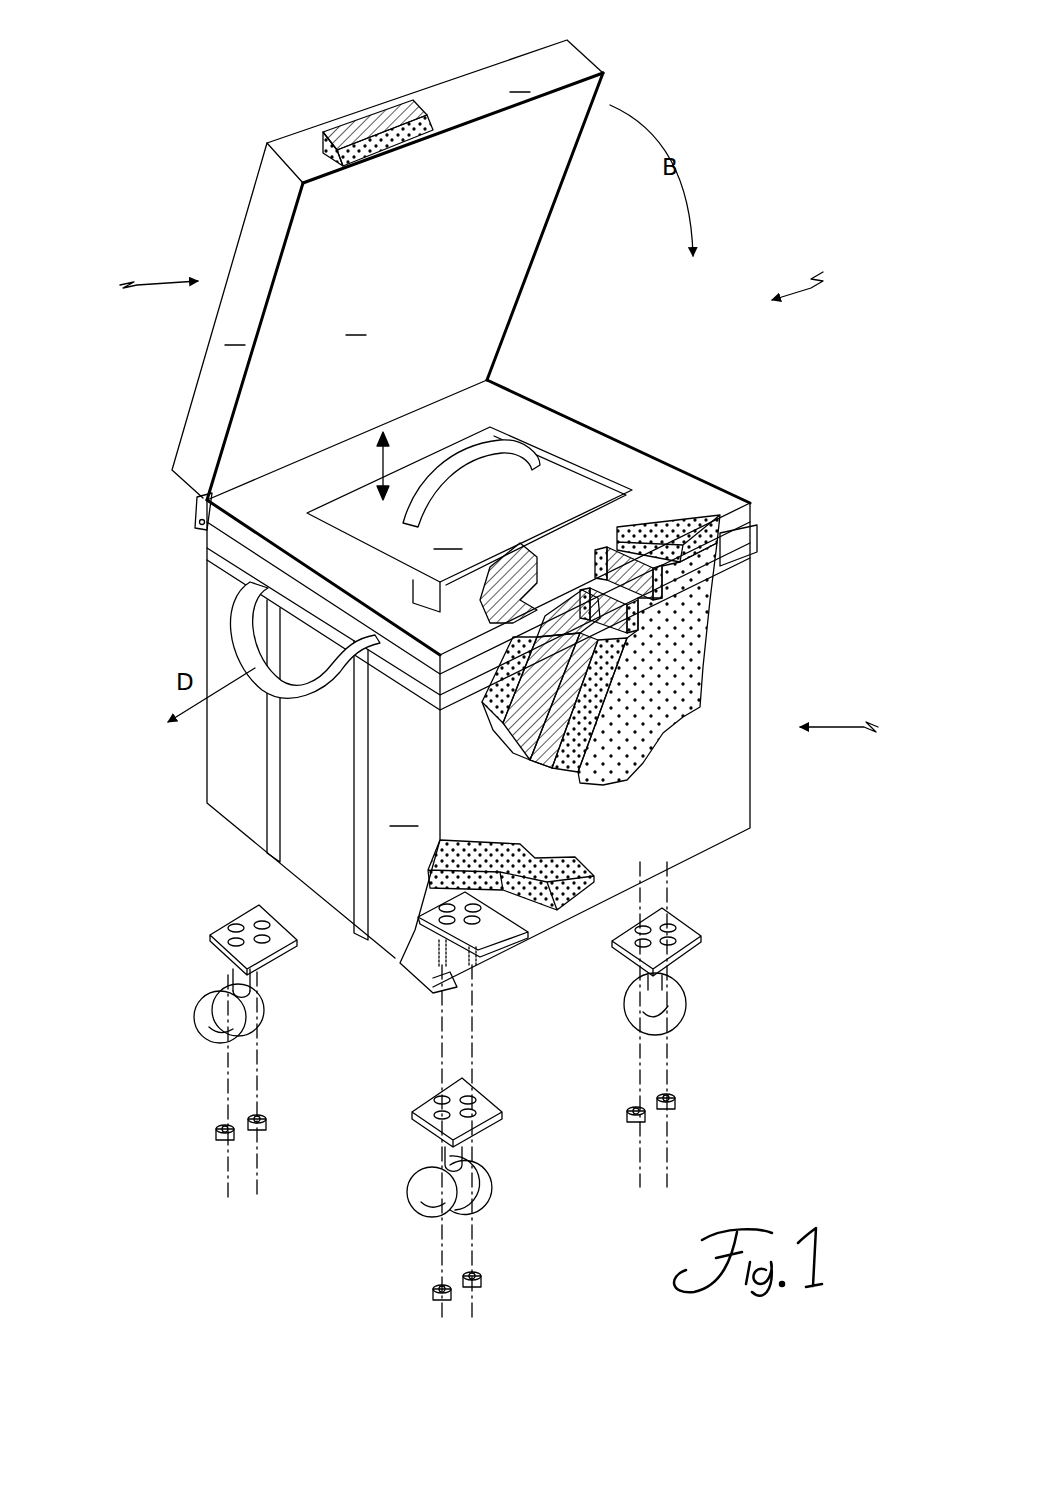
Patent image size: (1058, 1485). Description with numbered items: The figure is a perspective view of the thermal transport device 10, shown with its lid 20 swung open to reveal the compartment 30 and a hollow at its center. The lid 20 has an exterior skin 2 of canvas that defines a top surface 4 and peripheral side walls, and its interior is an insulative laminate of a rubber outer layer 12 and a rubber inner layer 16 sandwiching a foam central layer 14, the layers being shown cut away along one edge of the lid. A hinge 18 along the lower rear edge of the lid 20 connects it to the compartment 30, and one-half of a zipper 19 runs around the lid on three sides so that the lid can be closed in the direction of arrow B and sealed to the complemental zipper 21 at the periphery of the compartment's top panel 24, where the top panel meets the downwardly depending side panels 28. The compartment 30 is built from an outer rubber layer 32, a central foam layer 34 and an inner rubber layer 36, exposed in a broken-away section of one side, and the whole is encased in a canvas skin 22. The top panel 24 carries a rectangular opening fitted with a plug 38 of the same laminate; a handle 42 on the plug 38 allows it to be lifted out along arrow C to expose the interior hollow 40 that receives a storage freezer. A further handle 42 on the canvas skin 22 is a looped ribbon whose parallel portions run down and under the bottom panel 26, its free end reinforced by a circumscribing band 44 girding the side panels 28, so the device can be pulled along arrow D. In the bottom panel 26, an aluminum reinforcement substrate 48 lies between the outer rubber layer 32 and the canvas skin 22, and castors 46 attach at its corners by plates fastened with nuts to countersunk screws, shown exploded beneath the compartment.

The exterior skin 2 is at (432, 82).
The top surface 4 is at (172, 415).
The transport device 10 is at (815, 274).
The rubber outer layer 12 is at (375, 105).
The foam central layer 14 is at (347, 128).
The rubber inner layer 16 is at (327, 150).
The hinge 18 is at (345, 435).
The zipper 19 is at (285, 235).
The lid 20 is at (138, 285).
The zipper 21 is at (197, 500).
The canvas skin 22 is at (735, 578).
The top panel 24 is at (563, 432).
The bottom panel 26 is at (212, 806).
The side panels 28 is at (478, 746).
The compartment 30 is at (856, 727).
The outer rubber layer 32 is at (550, 868).
The central foam layer 34 is at (812, 608).
The inner rubber layer 36 is at (722, 420).
The plug 38 is at (469, 519).
The interior hollow 40 is at (440, 657).
The handle 42 is at (548, 340).
The circumscribing band 44 is at (232, 566).
The castors 46 is at (145, 983).
The reinforcement substrate 48 is at (540, 1048).